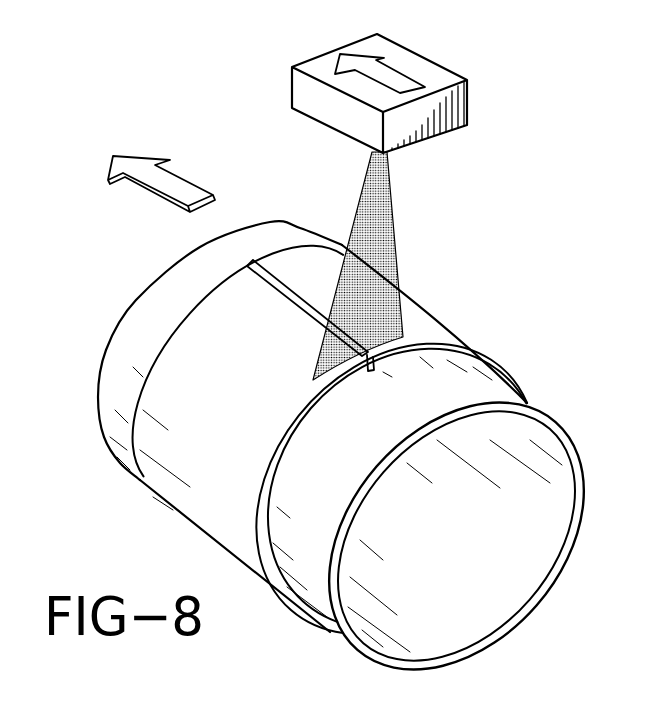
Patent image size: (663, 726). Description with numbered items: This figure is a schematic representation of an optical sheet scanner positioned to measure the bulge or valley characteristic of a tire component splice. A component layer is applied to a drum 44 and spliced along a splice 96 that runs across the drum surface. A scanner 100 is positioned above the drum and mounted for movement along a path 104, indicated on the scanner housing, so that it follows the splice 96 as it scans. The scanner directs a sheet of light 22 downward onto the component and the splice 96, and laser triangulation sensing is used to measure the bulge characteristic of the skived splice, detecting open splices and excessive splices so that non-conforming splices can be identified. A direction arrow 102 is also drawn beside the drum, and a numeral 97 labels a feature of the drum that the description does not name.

The sheet of light 22 is at (380, 222).
The drum 44 is at (488, 388).
The splice 96 is at (282, 291).
The cylindrical body 97 is at (433, 313).
The scanner 100 is at (430, 75).
The direction arrow 102 is at (137, 163).
The path 104 is at (358, 60).